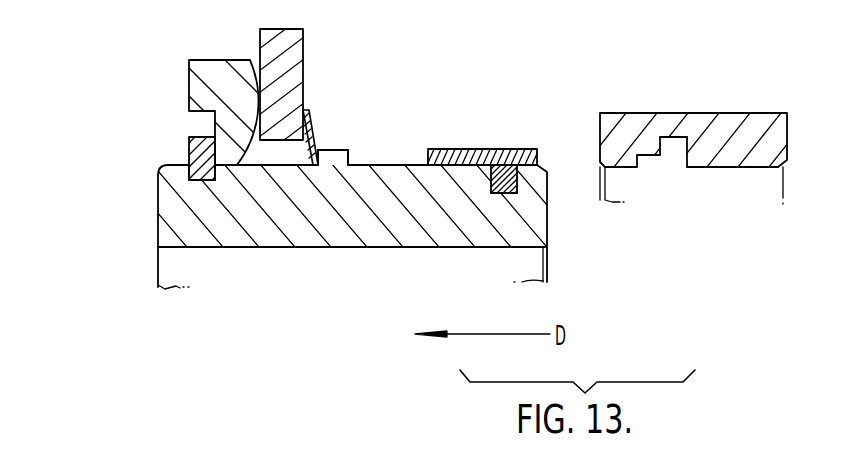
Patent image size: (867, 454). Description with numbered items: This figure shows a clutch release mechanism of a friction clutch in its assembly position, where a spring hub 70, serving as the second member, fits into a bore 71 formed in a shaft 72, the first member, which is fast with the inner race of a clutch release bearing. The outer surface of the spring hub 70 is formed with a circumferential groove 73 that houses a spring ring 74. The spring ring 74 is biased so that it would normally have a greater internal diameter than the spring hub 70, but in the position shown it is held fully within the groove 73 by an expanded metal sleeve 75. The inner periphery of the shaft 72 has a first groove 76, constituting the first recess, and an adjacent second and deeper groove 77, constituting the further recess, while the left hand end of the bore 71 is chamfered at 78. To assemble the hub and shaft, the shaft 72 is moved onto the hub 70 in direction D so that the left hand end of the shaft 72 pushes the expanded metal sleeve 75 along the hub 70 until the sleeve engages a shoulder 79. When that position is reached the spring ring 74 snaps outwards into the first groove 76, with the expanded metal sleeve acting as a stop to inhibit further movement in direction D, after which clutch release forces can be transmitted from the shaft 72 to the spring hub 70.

The spring hub 70 is at (374, 250).
The bore 71 is at (704, 168).
The shaft 72 is at (684, 110).
The circumferential groove 73 is at (505, 188).
The spring ring 74 is at (505, 188).
The expanded metal sleeve 75 is at (490, 153).
The first groove 76 is at (648, 157).
The second groove 77 is at (675, 139).
The chamfer 78 is at (603, 175).
The shoulder 79 is at (350, 152).